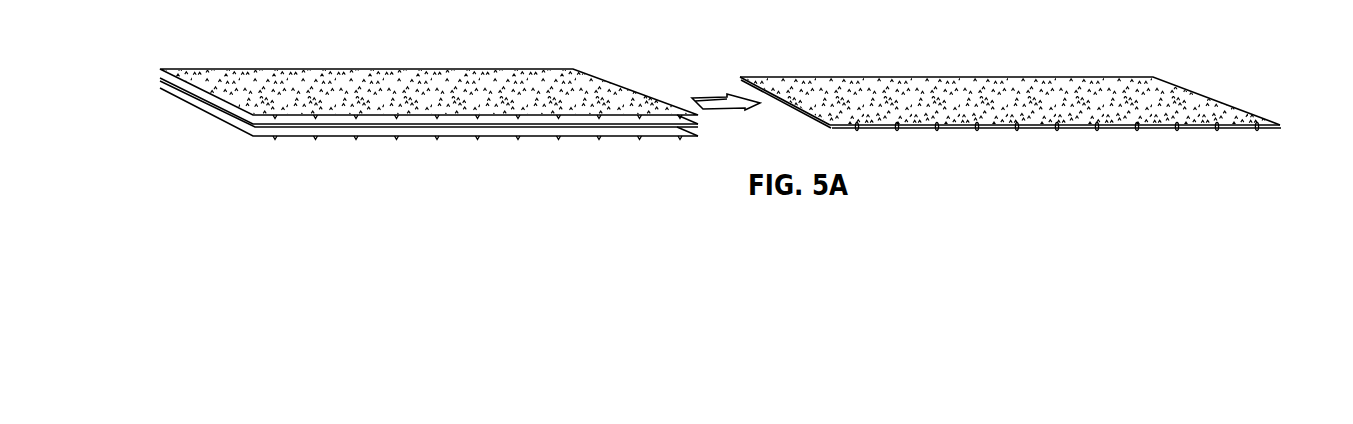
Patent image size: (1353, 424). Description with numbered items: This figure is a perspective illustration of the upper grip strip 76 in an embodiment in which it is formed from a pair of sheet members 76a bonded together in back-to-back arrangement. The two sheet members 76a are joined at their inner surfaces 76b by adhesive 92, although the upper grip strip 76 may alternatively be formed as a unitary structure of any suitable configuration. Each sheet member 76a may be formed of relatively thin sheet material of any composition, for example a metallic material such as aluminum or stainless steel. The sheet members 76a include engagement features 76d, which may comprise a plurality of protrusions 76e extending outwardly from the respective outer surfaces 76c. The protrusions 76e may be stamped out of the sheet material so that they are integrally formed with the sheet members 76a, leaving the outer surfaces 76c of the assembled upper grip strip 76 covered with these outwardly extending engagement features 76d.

The upper grip strip 76 is at (236, 69).
The sheet members 76a is at (161, 70).
The inner surfaces 76b is at (237, 115).
The outer surfaces 76c is at (336, 77).
The engagement features 76d is at (447, 82).
The protrusions 76e is at (861, 69).
The adhesive 92 is at (699, 124).